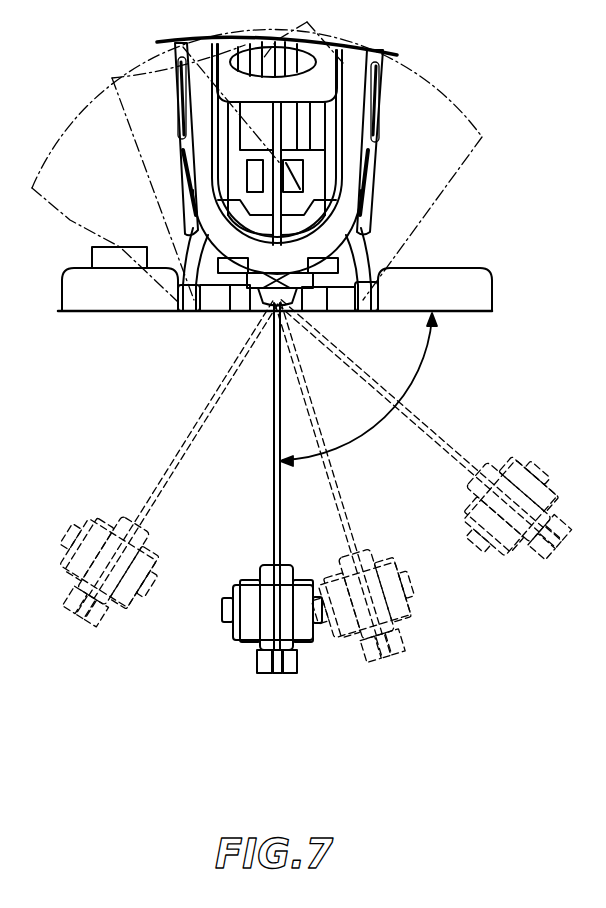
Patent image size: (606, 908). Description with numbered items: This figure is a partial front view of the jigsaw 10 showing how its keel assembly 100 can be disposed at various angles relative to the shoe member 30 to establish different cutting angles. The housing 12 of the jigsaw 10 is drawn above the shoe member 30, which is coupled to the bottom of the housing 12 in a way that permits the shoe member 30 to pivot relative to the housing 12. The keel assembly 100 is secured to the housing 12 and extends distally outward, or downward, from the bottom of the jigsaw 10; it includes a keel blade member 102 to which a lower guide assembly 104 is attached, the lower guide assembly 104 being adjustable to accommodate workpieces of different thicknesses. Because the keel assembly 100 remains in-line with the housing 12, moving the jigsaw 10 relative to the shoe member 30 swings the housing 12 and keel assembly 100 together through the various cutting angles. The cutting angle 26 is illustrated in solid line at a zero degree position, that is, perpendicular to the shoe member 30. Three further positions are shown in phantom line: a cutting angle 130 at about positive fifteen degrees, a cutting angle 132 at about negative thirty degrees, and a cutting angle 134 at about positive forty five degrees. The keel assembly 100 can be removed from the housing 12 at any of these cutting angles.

The jigsaw 10 is at (470, 62).
The housing 12 is at (100, 100).
The shoe member 30 is at (488, 292).
The cutting angle 26 is at (428, 364).
The keel assembly 100 is at (253, 523).
The keel blade member 102 is at (273, 418).
The lower guide assembly 104 is at (250, 686).
The cutting angle 130 is at (347, 507).
The cutting angle 132 is at (190, 436).
The cutting angle 134 is at (453, 450).